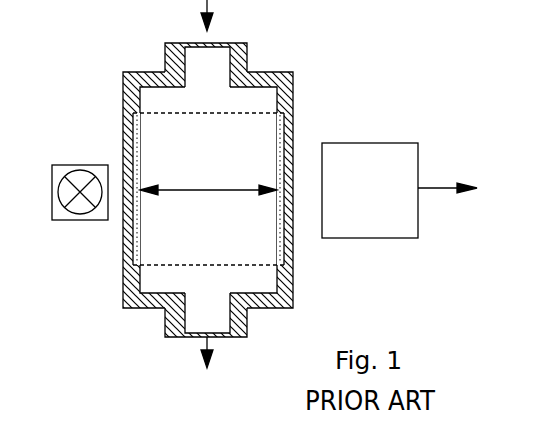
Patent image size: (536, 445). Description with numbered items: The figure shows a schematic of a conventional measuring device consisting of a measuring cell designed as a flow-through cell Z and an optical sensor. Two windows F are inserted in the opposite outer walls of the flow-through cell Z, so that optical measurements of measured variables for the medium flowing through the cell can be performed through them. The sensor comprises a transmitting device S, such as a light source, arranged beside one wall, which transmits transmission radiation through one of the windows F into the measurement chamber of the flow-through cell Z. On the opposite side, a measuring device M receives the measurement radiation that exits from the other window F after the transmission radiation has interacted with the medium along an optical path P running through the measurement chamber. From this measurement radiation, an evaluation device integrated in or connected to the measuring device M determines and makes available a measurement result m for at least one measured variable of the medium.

The flow-through cell Z is at (266, 72).
The window F is at (124, 149).
The optical path P is at (217, 190).
The transmitting device S is at (68, 215).
The measuring device M is at (370, 190).
The measurement result m is at (447, 175).